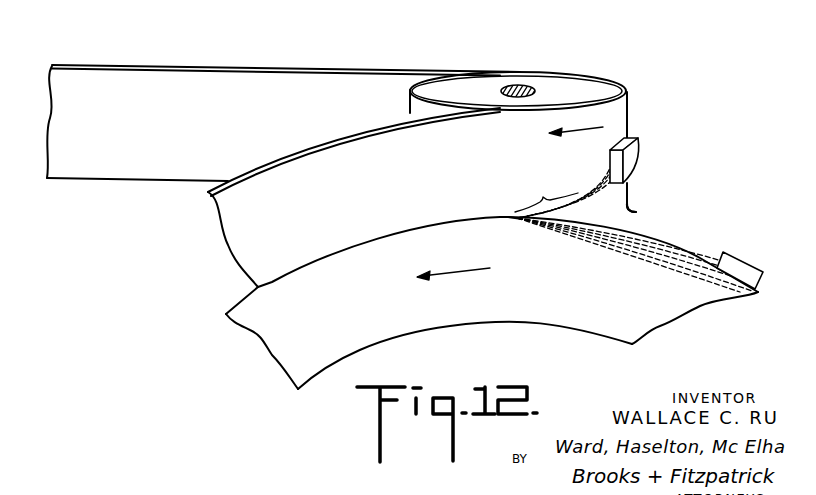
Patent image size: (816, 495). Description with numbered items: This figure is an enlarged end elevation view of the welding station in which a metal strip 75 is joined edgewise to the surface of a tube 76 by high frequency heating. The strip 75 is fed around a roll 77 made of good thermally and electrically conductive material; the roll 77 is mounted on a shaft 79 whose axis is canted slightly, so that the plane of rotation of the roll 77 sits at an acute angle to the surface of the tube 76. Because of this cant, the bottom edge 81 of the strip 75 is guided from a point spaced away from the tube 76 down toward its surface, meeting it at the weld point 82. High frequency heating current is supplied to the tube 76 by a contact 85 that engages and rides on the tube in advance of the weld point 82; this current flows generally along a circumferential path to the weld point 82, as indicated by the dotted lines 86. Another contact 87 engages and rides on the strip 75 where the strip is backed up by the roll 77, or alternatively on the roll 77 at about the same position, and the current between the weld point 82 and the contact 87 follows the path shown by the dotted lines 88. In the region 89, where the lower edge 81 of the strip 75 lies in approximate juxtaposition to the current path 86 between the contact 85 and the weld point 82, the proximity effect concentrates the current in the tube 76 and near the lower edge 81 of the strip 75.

The strip 75 is at (366, 162).
The tube 76 is at (556, 296).
The roll 77 is at (577, 88).
The shaft 79 is at (520, 86).
The bottom edge 81 is at (636, 212).
The weld point 82 is at (512, 218).
The contact 85 is at (742, 264).
The dotted lines 86 is at (646, 253).
The contact 87 is at (636, 166).
The dotted lines 88 is at (595, 192).
The region 89 is at (543, 198).